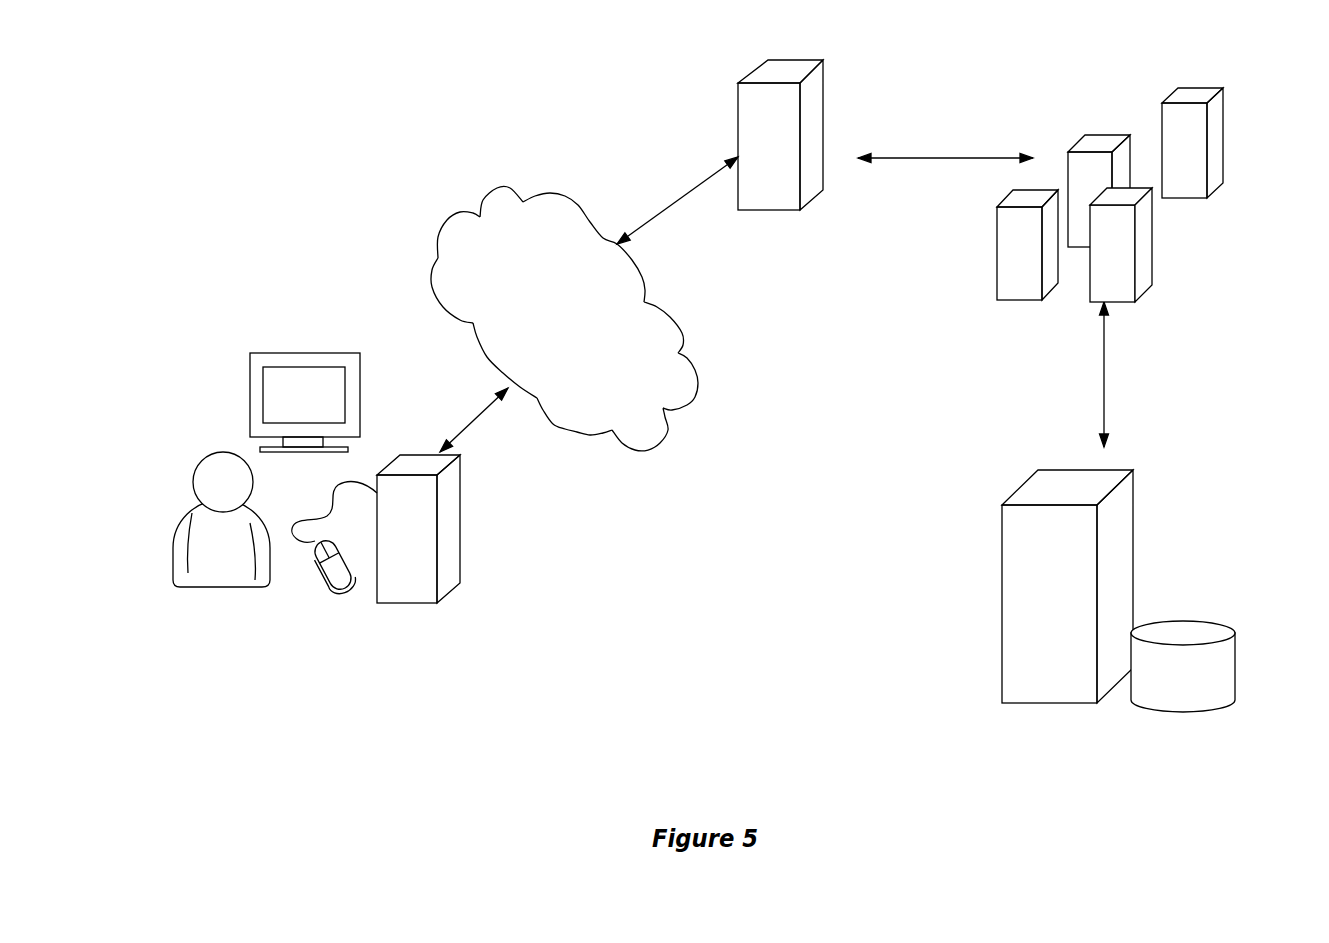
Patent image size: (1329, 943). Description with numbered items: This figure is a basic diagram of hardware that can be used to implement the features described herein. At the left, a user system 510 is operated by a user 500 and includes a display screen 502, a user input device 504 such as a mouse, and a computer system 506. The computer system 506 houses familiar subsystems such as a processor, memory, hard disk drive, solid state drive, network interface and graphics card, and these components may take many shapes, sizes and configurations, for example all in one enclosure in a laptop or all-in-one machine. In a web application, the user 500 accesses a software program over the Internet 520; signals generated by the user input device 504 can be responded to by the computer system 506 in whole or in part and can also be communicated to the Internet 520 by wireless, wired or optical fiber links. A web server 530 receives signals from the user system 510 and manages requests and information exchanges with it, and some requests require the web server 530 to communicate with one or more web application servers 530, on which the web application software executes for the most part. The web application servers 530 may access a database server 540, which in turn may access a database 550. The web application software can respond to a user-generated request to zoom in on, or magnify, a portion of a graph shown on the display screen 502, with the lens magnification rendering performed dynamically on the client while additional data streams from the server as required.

The user 500 is at (240, 557).
The display screen 502 is at (323, 405).
The user input device 504 is at (332, 542).
The computer system 506 is at (428, 531).
The user system 510 is at (208, 376).
The Internet 520 is at (597, 379).
The web server 530 is at (788, 141).
The database server 540 is at (1076, 571).
The database 550 is at (1198, 684).